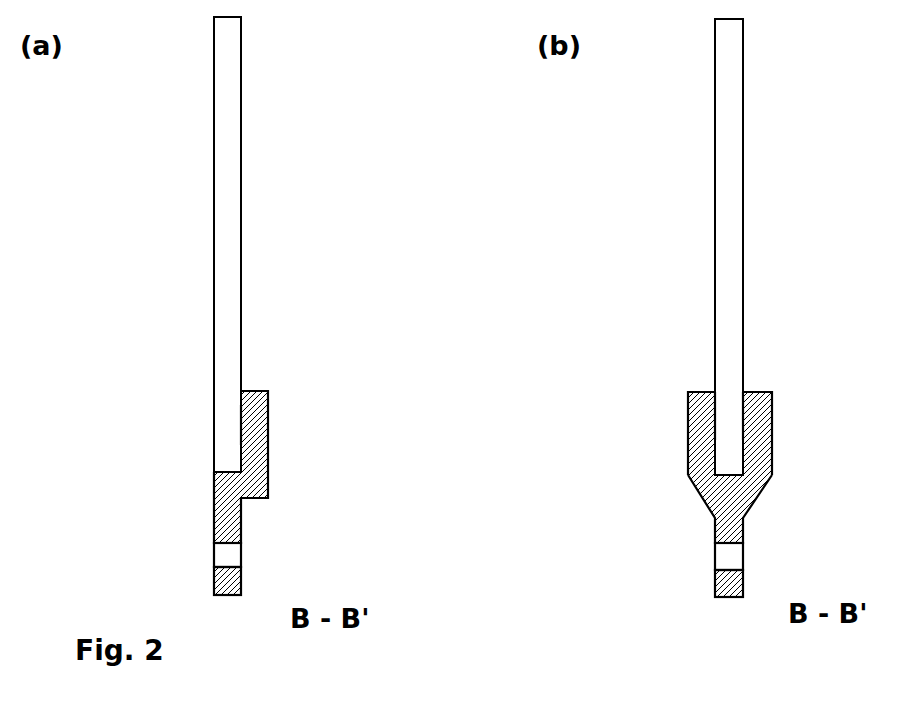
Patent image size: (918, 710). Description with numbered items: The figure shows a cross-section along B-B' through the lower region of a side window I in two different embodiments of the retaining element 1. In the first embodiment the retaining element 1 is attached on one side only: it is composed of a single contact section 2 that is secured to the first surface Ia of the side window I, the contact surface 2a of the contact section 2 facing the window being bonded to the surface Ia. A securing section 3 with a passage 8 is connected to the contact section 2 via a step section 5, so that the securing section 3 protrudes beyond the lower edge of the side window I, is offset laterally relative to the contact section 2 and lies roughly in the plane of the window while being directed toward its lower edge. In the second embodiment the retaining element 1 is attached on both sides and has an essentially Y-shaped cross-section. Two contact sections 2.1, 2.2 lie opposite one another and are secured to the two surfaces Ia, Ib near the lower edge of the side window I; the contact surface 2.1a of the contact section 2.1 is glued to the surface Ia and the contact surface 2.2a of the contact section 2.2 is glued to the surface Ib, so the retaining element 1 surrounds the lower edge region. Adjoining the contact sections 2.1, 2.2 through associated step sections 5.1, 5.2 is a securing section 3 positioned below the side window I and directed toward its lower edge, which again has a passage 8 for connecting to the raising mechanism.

The side window I is at (233, 177).
The first surface of the side window Ia is at (254, 207).
The second surface of the side window Ib is at (202, 219).
The retaining element 1 is at (301, 369).
The contact section 2 is at (257, 433).
The contact surface 2a is at (229, 432).
The step section 5 is at (238, 485).
The securing section 3 is at (223, 533).
The passage 8 is at (230, 553).
The first contact section 2.1 is at (702, 432).
The second contact section 2.2 is at (760, 432).
The contact surface of the first contact section 2.1a is at (704, 412).
The contact surface of the second contact section 2.2a is at (731, 410).
The first step section 5.1 is at (707, 492).
The second step section 5.2 is at (750, 490).